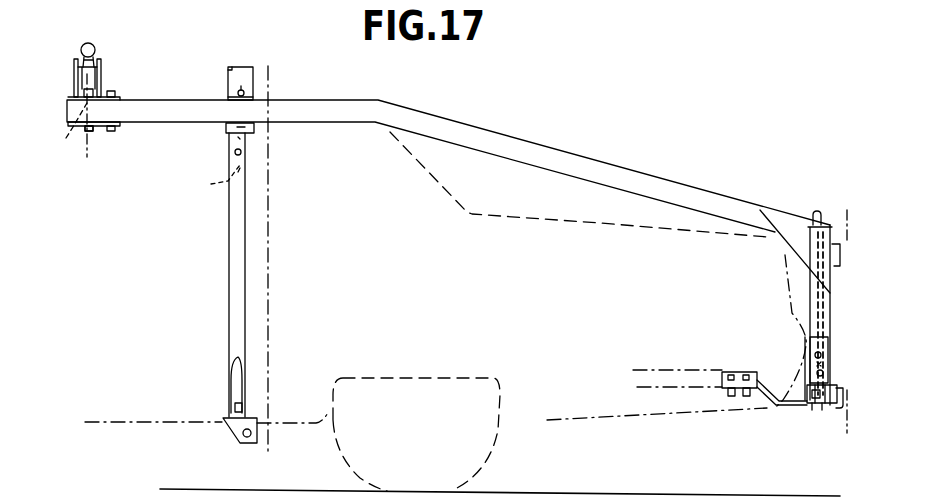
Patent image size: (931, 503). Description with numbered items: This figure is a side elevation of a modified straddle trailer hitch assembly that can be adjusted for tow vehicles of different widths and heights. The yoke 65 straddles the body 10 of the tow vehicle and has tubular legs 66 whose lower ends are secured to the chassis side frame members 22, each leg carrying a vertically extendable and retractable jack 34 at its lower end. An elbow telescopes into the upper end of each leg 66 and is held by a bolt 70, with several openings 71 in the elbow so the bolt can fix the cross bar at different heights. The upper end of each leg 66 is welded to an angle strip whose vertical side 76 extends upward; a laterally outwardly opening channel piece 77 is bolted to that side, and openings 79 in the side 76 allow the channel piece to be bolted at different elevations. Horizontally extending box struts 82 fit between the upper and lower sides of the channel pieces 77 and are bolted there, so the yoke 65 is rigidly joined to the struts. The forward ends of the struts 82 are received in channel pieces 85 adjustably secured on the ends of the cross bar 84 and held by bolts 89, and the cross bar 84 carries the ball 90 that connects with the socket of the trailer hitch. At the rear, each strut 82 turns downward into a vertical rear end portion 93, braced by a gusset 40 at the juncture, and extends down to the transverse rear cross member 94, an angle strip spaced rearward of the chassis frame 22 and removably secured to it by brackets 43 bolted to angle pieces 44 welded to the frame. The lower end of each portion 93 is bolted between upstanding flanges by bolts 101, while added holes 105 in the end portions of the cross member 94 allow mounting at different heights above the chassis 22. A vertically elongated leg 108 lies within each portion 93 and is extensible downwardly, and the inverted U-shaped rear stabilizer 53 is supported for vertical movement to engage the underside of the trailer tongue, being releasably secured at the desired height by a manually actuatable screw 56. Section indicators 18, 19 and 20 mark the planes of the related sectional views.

The body 10 is at (462, 202).
The section line 18 is at (266, 62).
The section line 19 is at (85, 78).
The section line 20 is at (858, 208).
The chassis side frame member 22 is at (687, 370).
The jack 34 is at (231, 388).
The gusset 40 is at (790, 242).
The bracket 43 is at (778, 407).
The angle piece 44 is at (743, 380).
The rear stabilizer 53 is at (816, 211).
The locking screw 56 is at (823, 233).
The yoke 65 is at (226, 289).
The leg 66 is at (228, 311).
The bolt 70 is at (234, 153).
The openings 71 is at (216, 180).
The vertical side of angle strip 76 is at (248, 67).
The channel piece 77 is at (227, 97).
The openings 79 is at (236, 68).
The box strut 82 is at (613, 167).
The cross bar 84 is at (101, 72).
The channel piece 85 is at (97, 130).
The bolt 89 is at (70, 130).
The ball 90 is at (92, 46).
The rear end portion of strut 93 is at (812, 301).
The rear cross member 94 is at (816, 402).
The bolt 101 is at (815, 374).
The holes 105 is at (829, 352).
The leg 108 is at (812, 332).